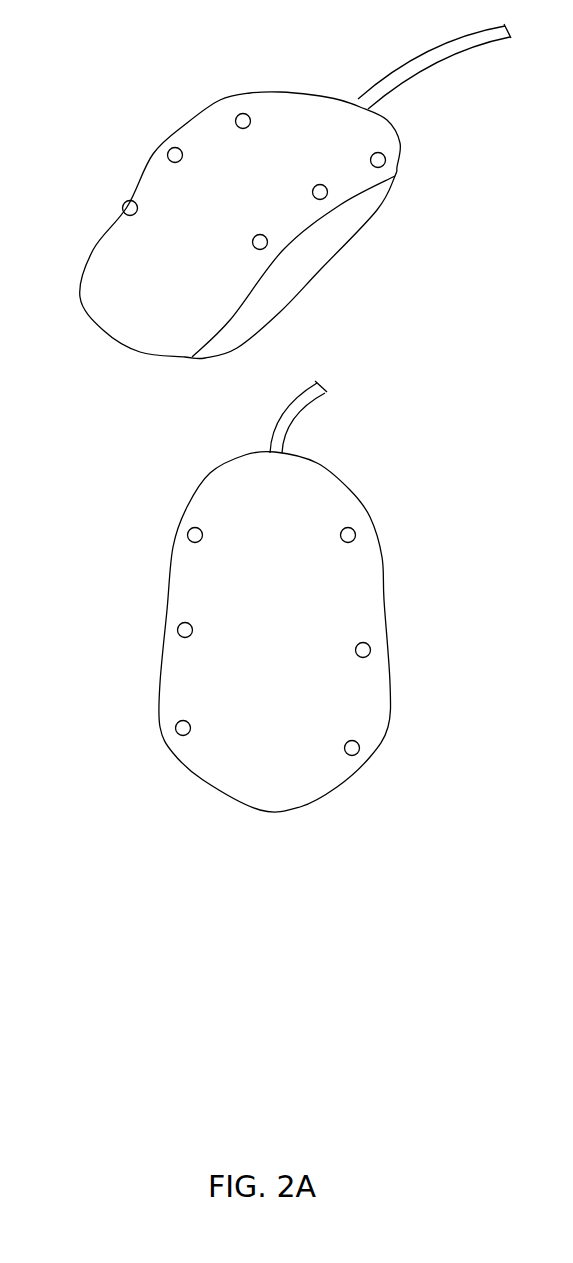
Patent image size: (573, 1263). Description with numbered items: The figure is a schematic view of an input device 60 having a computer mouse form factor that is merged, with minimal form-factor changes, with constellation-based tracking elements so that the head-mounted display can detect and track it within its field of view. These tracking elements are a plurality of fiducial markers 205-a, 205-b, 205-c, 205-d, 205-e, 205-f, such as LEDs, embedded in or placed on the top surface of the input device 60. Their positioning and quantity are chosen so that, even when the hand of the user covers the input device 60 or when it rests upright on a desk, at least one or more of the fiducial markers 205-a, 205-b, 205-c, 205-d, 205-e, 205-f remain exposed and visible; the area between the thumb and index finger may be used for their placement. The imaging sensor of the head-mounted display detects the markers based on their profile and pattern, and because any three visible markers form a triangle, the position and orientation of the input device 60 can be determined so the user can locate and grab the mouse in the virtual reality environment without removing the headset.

The input device 60 is at (191, 128).
The fiducial marker 205-a is at (243, 113).
The fiducial marker 205-b is at (385, 163).
The fiducial marker 205-c is at (327, 194).
The fiducial marker 205-d is at (268, 245).
The fiducial marker 205-e is at (128, 208).
The fiducial marker 205-f is at (168, 150).